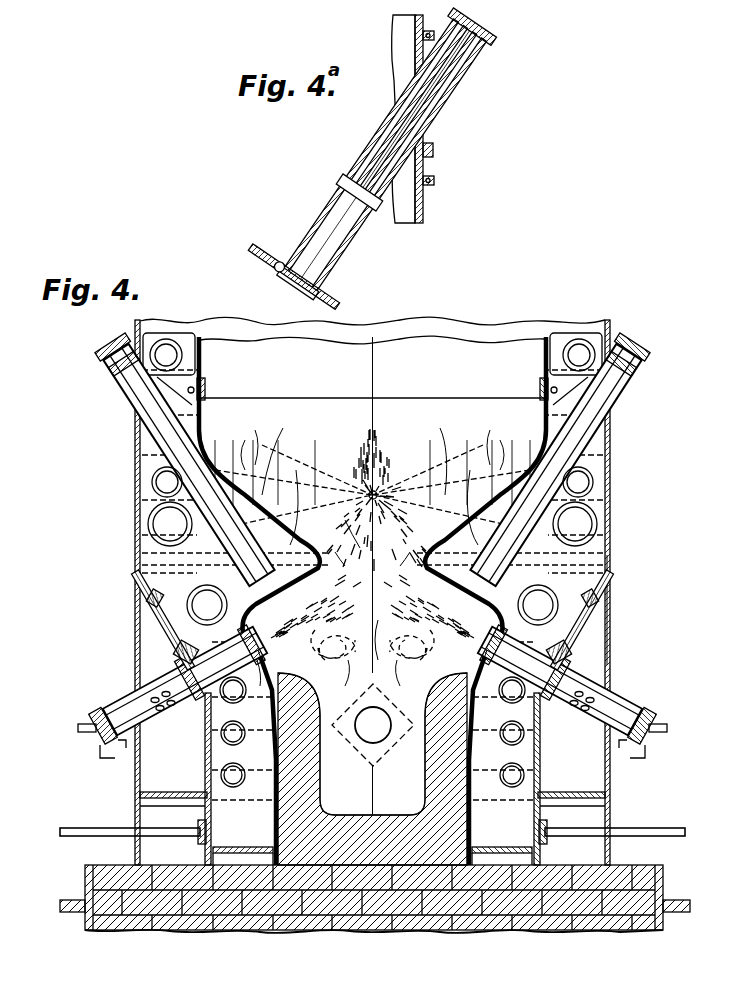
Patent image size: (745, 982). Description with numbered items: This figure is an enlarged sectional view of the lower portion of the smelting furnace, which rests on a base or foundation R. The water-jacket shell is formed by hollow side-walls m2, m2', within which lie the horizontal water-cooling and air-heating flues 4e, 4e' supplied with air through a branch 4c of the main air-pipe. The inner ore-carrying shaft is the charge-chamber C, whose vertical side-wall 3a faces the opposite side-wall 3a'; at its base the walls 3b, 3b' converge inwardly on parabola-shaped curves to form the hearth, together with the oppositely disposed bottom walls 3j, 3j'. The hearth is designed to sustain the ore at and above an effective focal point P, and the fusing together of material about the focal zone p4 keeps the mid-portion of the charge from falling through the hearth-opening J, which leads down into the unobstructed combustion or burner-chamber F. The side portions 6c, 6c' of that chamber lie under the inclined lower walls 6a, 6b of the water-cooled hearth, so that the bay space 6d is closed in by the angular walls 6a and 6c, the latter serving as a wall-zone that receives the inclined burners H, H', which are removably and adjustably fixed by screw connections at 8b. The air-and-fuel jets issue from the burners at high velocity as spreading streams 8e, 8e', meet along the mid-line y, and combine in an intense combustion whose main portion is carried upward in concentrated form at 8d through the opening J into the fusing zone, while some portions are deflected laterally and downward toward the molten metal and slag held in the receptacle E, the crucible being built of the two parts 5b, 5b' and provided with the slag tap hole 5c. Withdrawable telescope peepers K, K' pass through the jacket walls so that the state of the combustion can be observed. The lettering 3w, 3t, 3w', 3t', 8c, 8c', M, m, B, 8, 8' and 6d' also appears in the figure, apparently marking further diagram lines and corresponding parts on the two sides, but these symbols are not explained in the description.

In FIG. 4, the hollow side-wall m2 is at (118, 591).
In FIG. 4, the hollow side-wall m2' is at (641, 591).
In FIG. 4A, the hollow side-wall m2' is at (451, 119).
In FIG. 4, the side-wall of charge-chamber 3a is at (230, 383).
In FIG. 4, the upper chamber wall (right) 3a' is at (513, 383).
In FIG. 4, the charge-chamber C is at (372, 383).
In FIG. 4, the baffle 3w is at (240, 438).
In FIG. 4, the baffle 3t is at (278, 449).
In FIG. 4, the hearth-wall 3b is at (293, 495).
In FIG. 4, the focal zone p4 is at (368, 456).
In FIG. 4, the concentrated upward stream 8d is at (345, 520).
In FIG. 4, the spray stream 8c is at (329, 517).
In FIG. 4, the effective focal point P is at (385, 482).
In FIG. 4, the baffle (right) 3t' is at (436, 449).
In FIG. 4, the hearth-wall 3b' is at (466, 485).
In FIG. 4, the baffle (right) 3w' is at (500, 438).
In FIG. 4, the spray stream (right) 8c' is at (416, 517).
In FIG. 4, the brace M is at (590, 382).
In FIG. 4, the telescope peeper K is at (173, 459).
In FIG. 4, the telescope peeper K' is at (560, 459).
In FIG. 4A, the telescope peeper K' is at (387, 154).
In FIG. 4, the water-cooling and air-heating flue 4e is at (126, 482).
In FIG. 4, the water-cooling and air-heating flue 4e' is at (575, 641).
In FIG. 4, the casing wall m is at (142, 516).
In FIG. 4, the bottom wall 3j is at (260, 531).
In FIG. 4, the bottom wall 3j' is at (480, 531).
In FIG. 4, the inclined lower hearth wall 6a is at (274, 593).
In FIG. 4, the side portion of burner-chamber 6c is at (250, 621).
In FIG. 4, the inclined lower hearth wall 6b is at (470, 593).
In FIG. 4A, the inclined lower hearth wall 6b is at (275, 262).
In FIG. 4, the side portion of burner-chamber 6c' is at (497, 619).
In FIG. 4, the casing B is at (620, 610).
In FIG. 4A, the casing B is at (414, 126).
In FIG. 4, the burner H is at (172, 691).
In FIG. 4, the burner H' is at (572, 691).
In FIG. 4, the valve rod 8 is at (189, 620).
In FIG. 4, the valve rod (right) 8' is at (556, 620).
In FIG. 4, the bay space 6d is at (281, 704).
In FIG. 4, the lining wall (right) 6d' is at (488, 705).
In FIG. 4, the hearth-opening J is at (329, 645).
In FIG. 4, the combustion chamber F is at (412, 645).
In FIG. 4, the mid-line y is at (382, 631).
In FIG. 4, the screw connection 8b is at (259, 680).
In FIG. 4, the spreading jet 8e is at (342, 680).
In FIG. 4, the spreading jet 8e' is at (401, 680).
In FIG. 4, the slag tap hole 5c is at (386, 722).
In FIG. 4, the crucible part 5b is at (318, 744).
In FIG. 4, the crucible part 5b' is at (429, 744).
In FIG. 4, the receptacle E is at (372, 803).
In FIG. 4, the air-pipe branch 4c is at (236, 788).
In FIG. 4, the base or foundation R is at (522, 925).